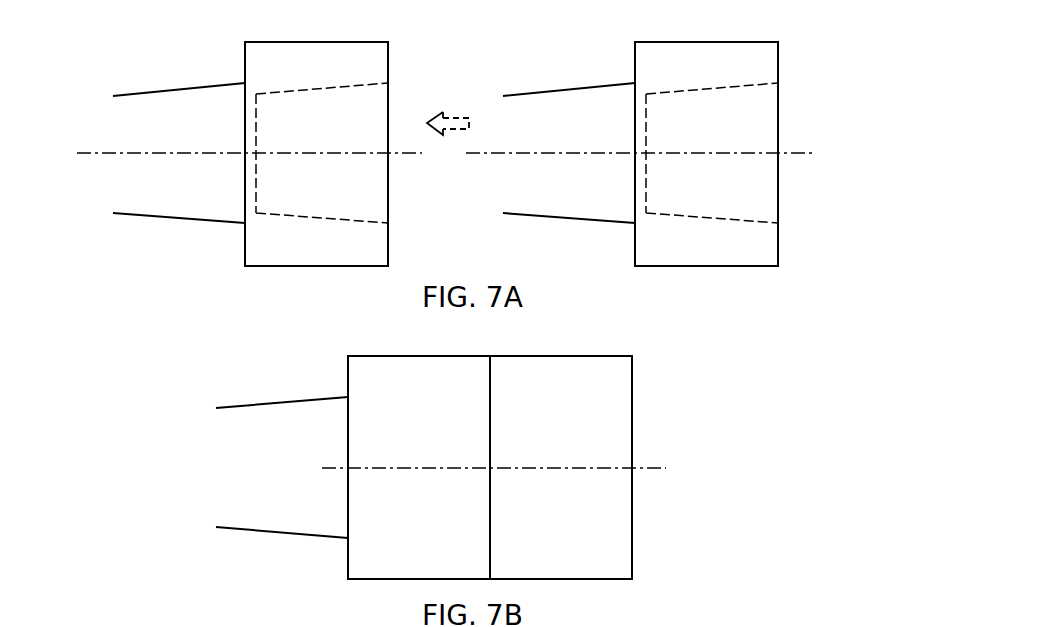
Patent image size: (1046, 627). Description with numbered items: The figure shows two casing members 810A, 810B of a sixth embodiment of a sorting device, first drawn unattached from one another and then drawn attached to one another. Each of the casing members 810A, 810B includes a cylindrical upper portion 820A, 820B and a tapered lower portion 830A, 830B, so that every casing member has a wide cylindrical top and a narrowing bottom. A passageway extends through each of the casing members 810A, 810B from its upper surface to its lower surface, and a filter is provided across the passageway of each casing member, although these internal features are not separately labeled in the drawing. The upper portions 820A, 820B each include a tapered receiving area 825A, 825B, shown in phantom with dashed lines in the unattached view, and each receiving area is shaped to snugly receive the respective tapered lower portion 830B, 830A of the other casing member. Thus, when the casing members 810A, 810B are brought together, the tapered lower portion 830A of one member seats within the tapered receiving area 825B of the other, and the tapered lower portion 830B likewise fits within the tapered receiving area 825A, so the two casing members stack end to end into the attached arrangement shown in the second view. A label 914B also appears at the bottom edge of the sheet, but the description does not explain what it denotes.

In FIG. 7A, the casing member 810A is at (215, 170).
In FIG. 7B, the casing member 810A is at (351, 464).
In FIG. 7A, the casing member 810B is at (609, 170).
In FIG. 7A, the cylindrical upper portion 820A is at (252, 198).
In FIG. 7B, the cylindrical upper portion 820A is at (410, 377).
In FIG. 7A, the cylindrical upper portion 820B is at (642, 198).
In FIG. 7B, the cylindrical upper portion 820B is at (582, 375).
In FIG. 7A, the tapered receiving area 825A is at (323, 87).
In FIG. 7A, the tapered receiving area 825B is at (713, 87).
In FIG. 7A, the tapered lower portion 830A is at (130, 173).
In FIG. 7B, the tapered lower portion 830A is at (241, 514).
In FIG. 7A, the tapered lower portion 830B is at (520, 173).
In FIG. 7B, the connector element 914B is at (268, 620).